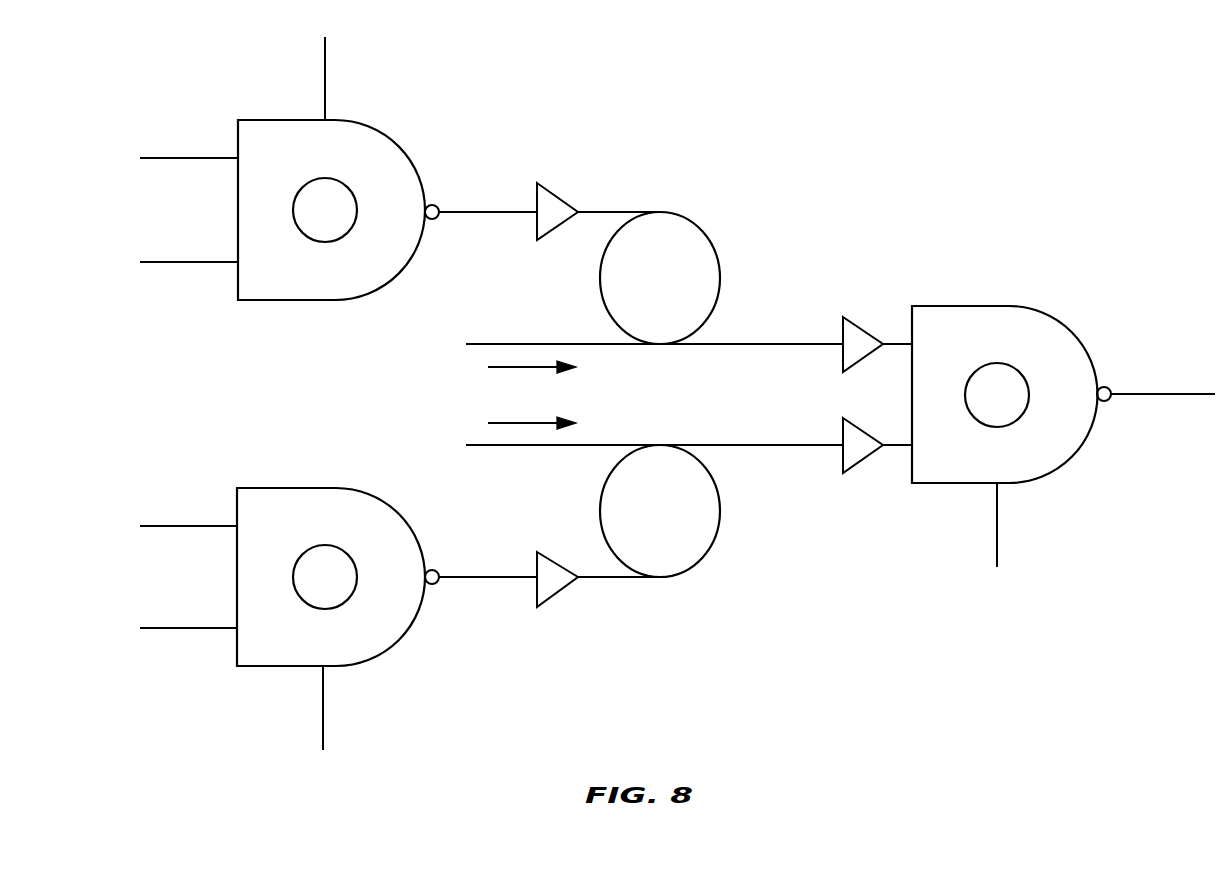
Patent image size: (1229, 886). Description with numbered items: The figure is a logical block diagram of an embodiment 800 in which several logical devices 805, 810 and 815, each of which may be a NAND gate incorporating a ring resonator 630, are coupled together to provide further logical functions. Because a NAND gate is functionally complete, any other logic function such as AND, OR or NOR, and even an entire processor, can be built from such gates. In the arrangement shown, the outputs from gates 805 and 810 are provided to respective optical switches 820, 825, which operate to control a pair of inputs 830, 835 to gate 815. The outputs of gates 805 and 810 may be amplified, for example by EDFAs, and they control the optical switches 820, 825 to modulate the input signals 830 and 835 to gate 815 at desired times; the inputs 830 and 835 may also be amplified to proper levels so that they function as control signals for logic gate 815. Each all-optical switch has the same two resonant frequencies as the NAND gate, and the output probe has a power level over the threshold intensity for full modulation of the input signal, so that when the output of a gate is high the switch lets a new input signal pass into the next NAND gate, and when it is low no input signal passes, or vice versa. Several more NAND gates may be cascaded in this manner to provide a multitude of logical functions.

The embodiment of multiple NAND devices 800 is at (1111, 62).
The logical device 805 is at (380, 131).
The logical device 810 is at (380, 501).
The logical device 815 is at (1060, 320).
The optical switch 820 is at (720, 275).
The optical switch 825 is at (720, 509).
The input 830 is at (793, 345).
The input 835 is at (793, 446).
The ring resonator 630 is at (357, 211).